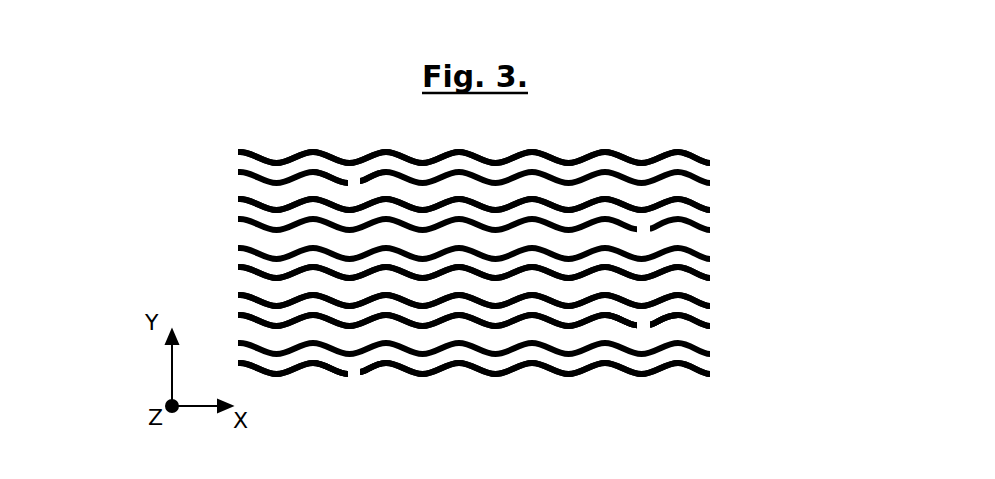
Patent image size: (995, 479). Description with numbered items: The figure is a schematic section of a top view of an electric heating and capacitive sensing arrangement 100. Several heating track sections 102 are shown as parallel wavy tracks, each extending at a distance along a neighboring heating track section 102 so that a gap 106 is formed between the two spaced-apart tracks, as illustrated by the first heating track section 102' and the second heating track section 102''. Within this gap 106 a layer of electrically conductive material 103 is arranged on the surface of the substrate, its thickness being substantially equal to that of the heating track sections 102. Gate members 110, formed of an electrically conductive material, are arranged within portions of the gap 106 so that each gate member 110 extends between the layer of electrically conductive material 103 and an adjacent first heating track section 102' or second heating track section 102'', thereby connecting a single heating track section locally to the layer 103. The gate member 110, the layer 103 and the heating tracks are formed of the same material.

The electric heating and capacitive sensing arrangement 100 is at (188, 179).
The heating track section 102 is at (550, 141).
The first heating track section 102' is at (551, 266).
The second heating track section 102'' is at (553, 316).
The layer of electrically conductive material 103 is at (707, 195).
The gap 106 is at (237, 294).
The gate member 110 is at (343, 170).